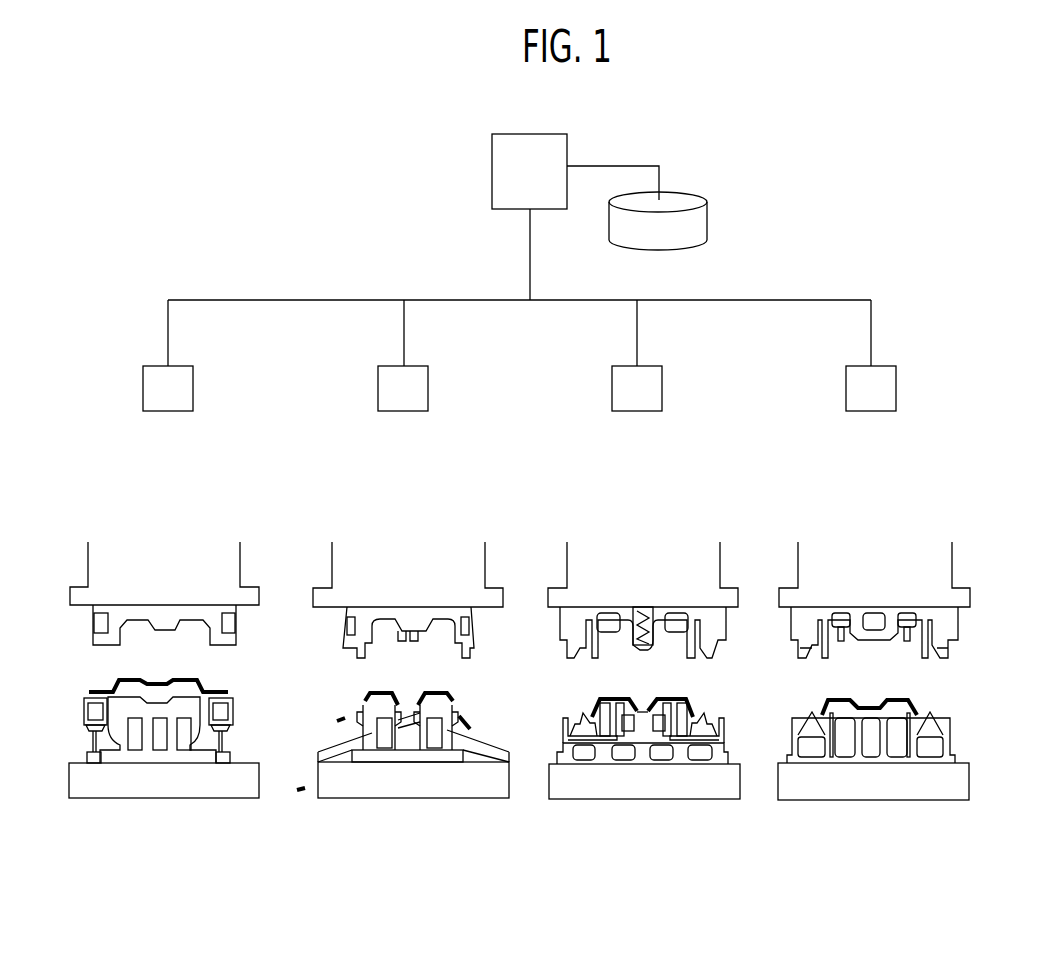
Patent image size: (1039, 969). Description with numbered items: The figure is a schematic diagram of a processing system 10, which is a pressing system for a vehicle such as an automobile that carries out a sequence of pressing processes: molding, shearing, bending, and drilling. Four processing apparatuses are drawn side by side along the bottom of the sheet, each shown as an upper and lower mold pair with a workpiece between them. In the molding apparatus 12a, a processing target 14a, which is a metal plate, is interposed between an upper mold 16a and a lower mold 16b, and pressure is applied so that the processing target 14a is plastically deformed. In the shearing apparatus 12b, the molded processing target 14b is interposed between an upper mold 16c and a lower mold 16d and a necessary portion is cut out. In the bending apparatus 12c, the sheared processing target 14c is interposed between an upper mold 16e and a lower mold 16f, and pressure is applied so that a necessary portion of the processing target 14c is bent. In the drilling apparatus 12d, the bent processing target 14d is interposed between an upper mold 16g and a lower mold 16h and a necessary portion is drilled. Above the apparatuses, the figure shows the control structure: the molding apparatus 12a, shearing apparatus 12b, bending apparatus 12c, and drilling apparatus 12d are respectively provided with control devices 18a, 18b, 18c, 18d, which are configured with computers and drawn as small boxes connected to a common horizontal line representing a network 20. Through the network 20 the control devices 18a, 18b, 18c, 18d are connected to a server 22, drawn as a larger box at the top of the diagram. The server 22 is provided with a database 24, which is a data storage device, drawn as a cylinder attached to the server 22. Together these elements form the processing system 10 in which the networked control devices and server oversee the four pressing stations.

The processing system 10 is at (690, 945).
The molding apparatus 12a is at (170, 500).
The shearing apparatus 12b is at (399, 502).
The bending apparatus 12c is at (642, 502).
The drilling apparatus 12d is at (882, 502).
The processing target 14a is at (203, 682).
The molded processing target 14b is at (443, 688).
The sheared processing target 14c is at (672, 697).
The bent processing target 14d is at (907, 697).
The upper mold 16a is at (212, 613).
The lower mold 16b is at (170, 757).
The upper mold 16c is at (453, 610).
The lower mold 16d is at (408, 757).
The upper mold 16e is at (692, 610).
The lower mold 16f is at (642, 758).
The upper mold 16g is at (927, 610).
The lower mold 16h is at (858, 758).
The control device 18a is at (186, 366).
The control device 18b is at (421, 366).
The control device 18c is at (655, 366).
The control device 18d is at (889, 366).
The network 20 is at (829, 300).
The server 22 is at (543, 134).
The database 24 is at (678, 195).